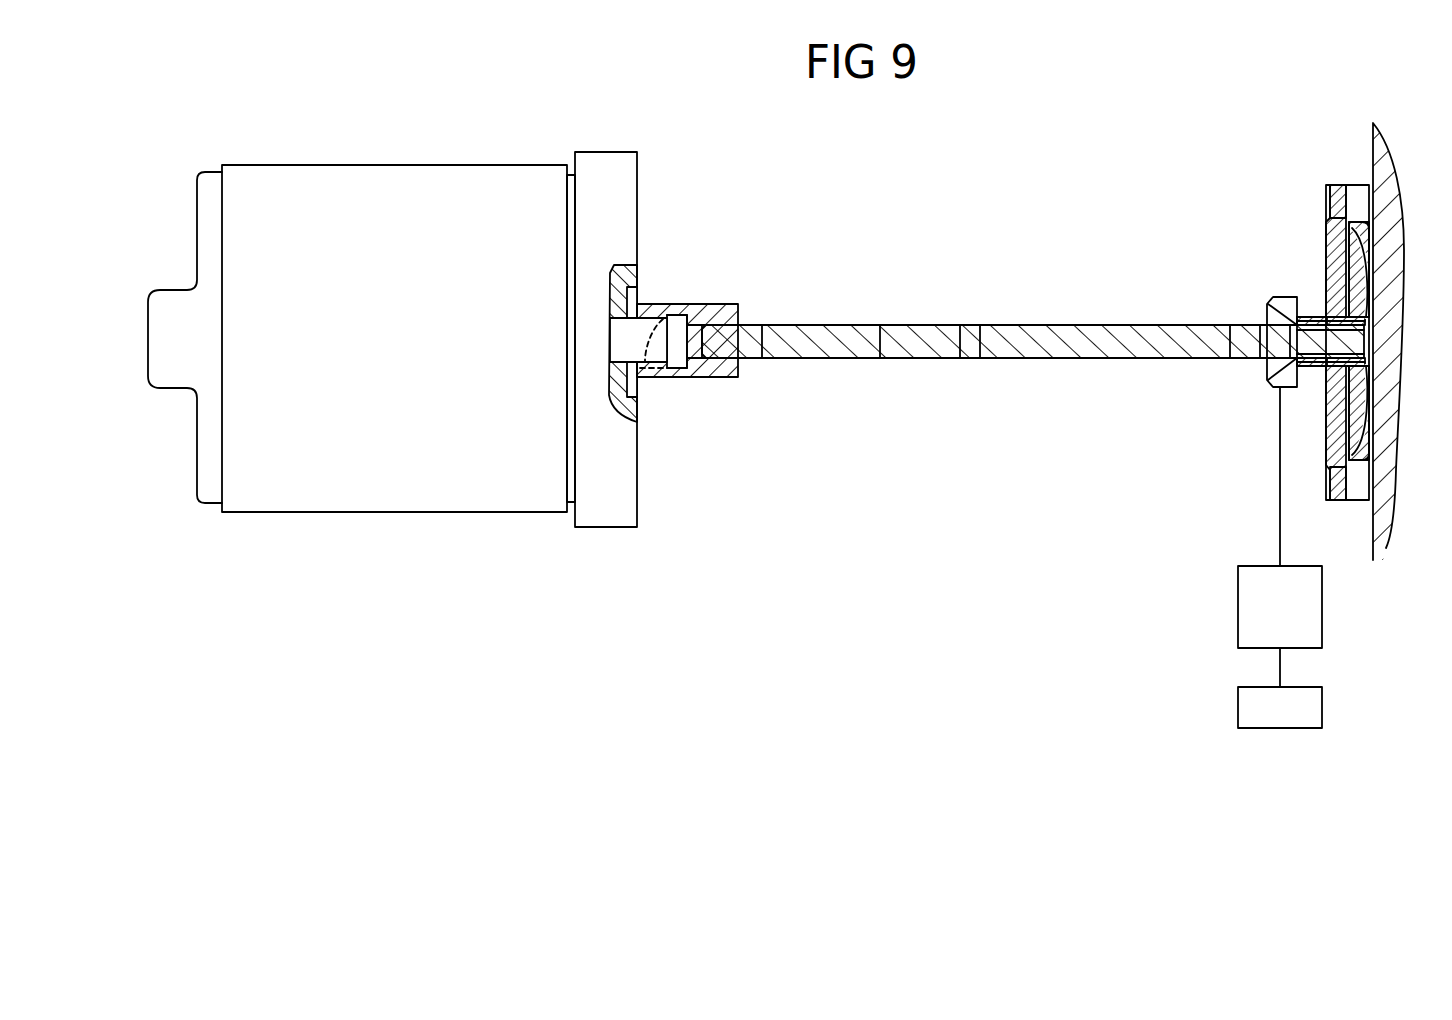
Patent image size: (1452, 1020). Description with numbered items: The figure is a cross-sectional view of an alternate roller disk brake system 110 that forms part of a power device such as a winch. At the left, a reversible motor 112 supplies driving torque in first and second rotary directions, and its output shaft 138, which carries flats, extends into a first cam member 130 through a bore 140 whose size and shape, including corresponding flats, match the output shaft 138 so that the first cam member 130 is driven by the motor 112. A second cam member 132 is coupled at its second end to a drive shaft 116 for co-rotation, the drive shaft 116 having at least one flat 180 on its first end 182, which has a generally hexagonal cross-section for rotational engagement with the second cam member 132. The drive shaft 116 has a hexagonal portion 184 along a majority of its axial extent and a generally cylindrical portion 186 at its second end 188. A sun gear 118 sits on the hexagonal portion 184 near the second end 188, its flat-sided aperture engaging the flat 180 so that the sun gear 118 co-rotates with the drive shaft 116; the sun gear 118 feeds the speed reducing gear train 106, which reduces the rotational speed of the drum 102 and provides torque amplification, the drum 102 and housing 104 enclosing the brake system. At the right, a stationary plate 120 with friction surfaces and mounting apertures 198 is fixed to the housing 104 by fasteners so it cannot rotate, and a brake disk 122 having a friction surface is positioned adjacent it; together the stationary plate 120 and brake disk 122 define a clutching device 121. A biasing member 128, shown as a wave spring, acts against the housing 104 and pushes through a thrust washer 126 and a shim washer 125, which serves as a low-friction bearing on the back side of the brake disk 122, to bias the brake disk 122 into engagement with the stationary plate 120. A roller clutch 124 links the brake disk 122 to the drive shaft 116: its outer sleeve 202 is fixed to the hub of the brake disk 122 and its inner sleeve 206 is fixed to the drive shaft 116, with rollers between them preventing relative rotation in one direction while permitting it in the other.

The drum 102 is at (1238, 712).
The housing 104 is at (1383, 556).
The speed reducing gear train 106 is at (1238, 614).
The roller disk brake system 110 is at (930, 242).
The motor 112 is at (388, 165).
The drive shaft 116 is at (906, 358).
The sun gear 118 is at (1275, 312).
The stationary plate 120 is at (1332, 192).
The clutching device 121 is at (1318, 168).
The brake disk 122 is at (1344, 185).
The roller clutch 124 is at (1316, 300).
The shim washer 125 is at (1334, 420).
The thrust washer 126 is at (1357, 222).
The biasing member 128 is at (1364, 437).
The first cam member 130 is at (645, 382).
The second cam member 132 is at (712, 377).
The output shaft 138 is at (632, 318).
The bore 140 is at (648, 304).
The flat 180 is at (822, 325).
The first end 182 is at (718, 342).
The hexagonal portion 184 is at (978, 325).
The cylindrical portion 186 is at (1335, 342).
The second end 188 is at (1278, 342).
The mounting apertures 198 is at (1331, 210).
The outer sleeve 202 is at (1305, 317).
The inner sleeve 206 is at (1304, 366).